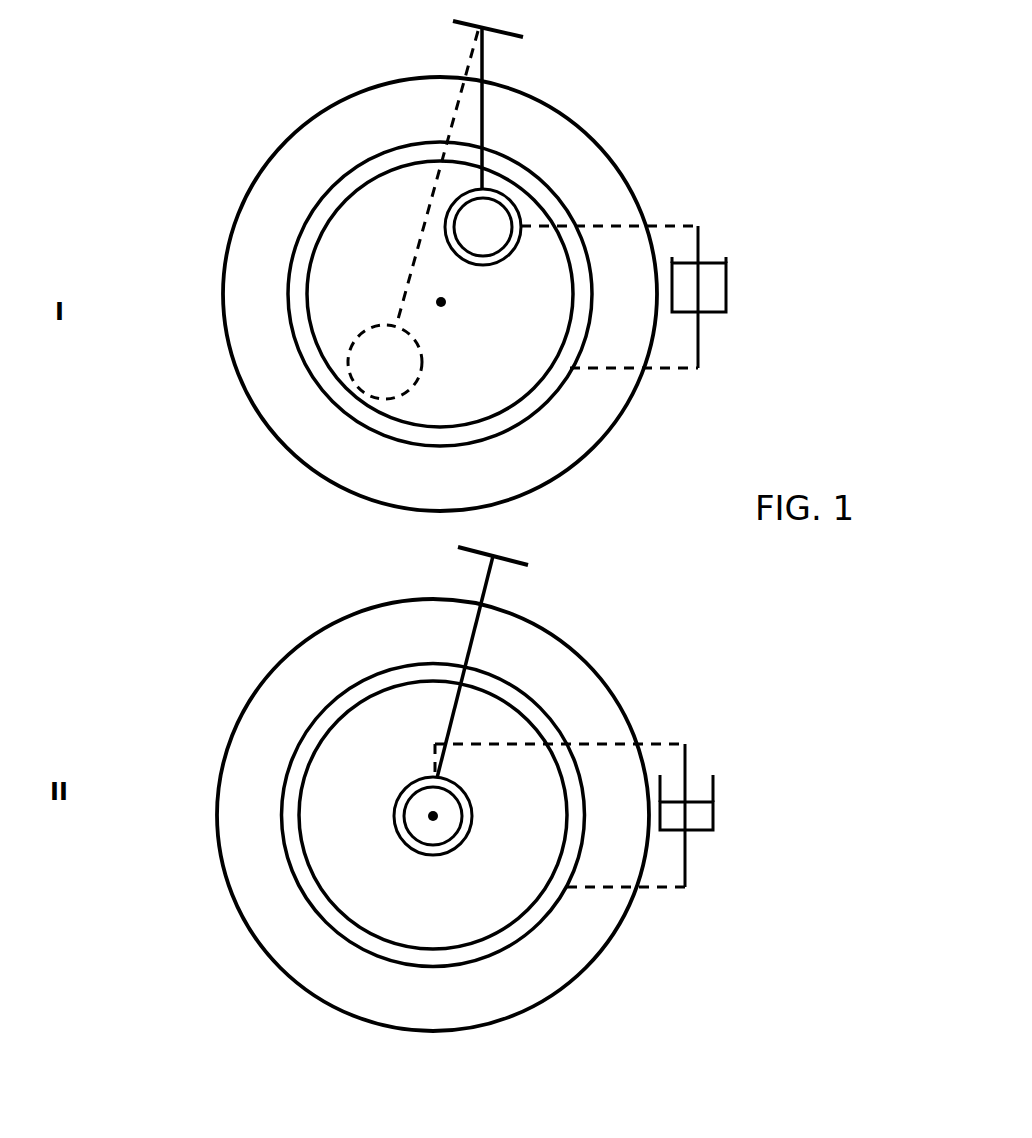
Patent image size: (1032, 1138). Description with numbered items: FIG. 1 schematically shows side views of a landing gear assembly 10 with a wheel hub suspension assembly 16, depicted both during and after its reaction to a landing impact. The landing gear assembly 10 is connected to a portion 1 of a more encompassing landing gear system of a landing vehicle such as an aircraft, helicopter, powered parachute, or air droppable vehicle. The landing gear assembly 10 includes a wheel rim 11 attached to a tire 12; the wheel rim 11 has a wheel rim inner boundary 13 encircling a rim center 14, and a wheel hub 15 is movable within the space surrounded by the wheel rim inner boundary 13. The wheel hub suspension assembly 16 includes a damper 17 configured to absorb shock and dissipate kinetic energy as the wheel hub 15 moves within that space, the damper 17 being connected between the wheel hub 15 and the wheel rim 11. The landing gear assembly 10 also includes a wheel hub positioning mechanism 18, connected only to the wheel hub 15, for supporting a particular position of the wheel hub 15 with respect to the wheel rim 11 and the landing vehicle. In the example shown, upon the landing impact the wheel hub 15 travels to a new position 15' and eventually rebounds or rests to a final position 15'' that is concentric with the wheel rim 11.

The portion of landing gear system 1 is at (500, 32).
The landing gear assembly 10 is at (192, 188).
The wheel rim 11 is at (289, 271).
The tire 12 is at (237, 370).
The wheel rim inner boundary 13 is at (528, 381).
The rim center 14 is at (441, 302).
The wheel hub 15 is at (556, 207).
The new position of wheel hub 15' is at (349, 248).
The final position of wheel hub 15'' is at (305, 815).
The wheel hub suspension assembly 16 is at (711, 203).
The damper 17 is at (726, 290).
The wheel hub positioning mechanism 18 is at (484, 68).